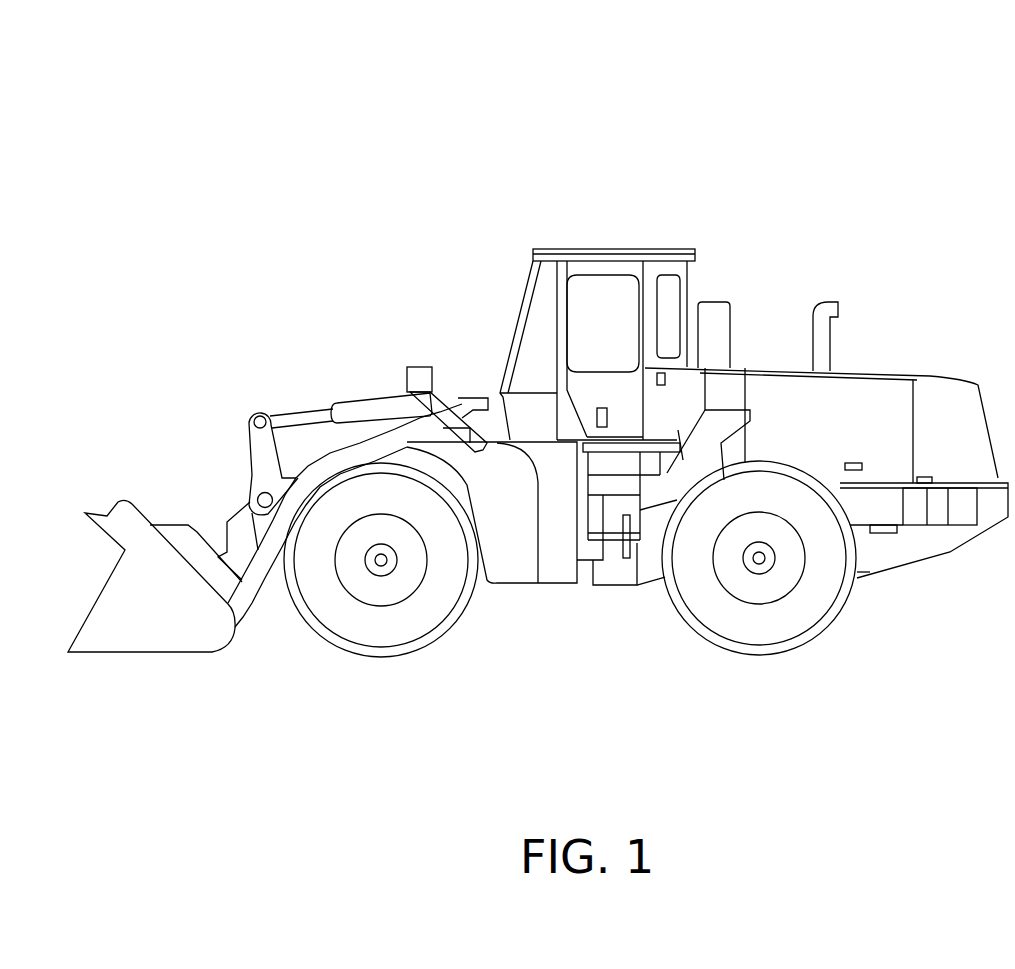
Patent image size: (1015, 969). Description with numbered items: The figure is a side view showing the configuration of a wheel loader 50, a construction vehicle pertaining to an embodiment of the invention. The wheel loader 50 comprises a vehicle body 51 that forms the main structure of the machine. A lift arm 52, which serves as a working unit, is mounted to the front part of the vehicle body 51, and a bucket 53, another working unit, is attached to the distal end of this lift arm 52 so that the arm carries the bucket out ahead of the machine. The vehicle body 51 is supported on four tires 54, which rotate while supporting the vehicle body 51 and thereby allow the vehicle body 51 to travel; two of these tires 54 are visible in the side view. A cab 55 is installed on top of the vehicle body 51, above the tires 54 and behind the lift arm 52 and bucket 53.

The wheel loader 50 is at (926, 145).
The vehicle body 51 is at (767, 317).
The lift arm 52 is at (324, 444).
The bucket 53 is at (108, 518).
The tires 54 is at (386, 633).
The cab 55 is at (621, 235).